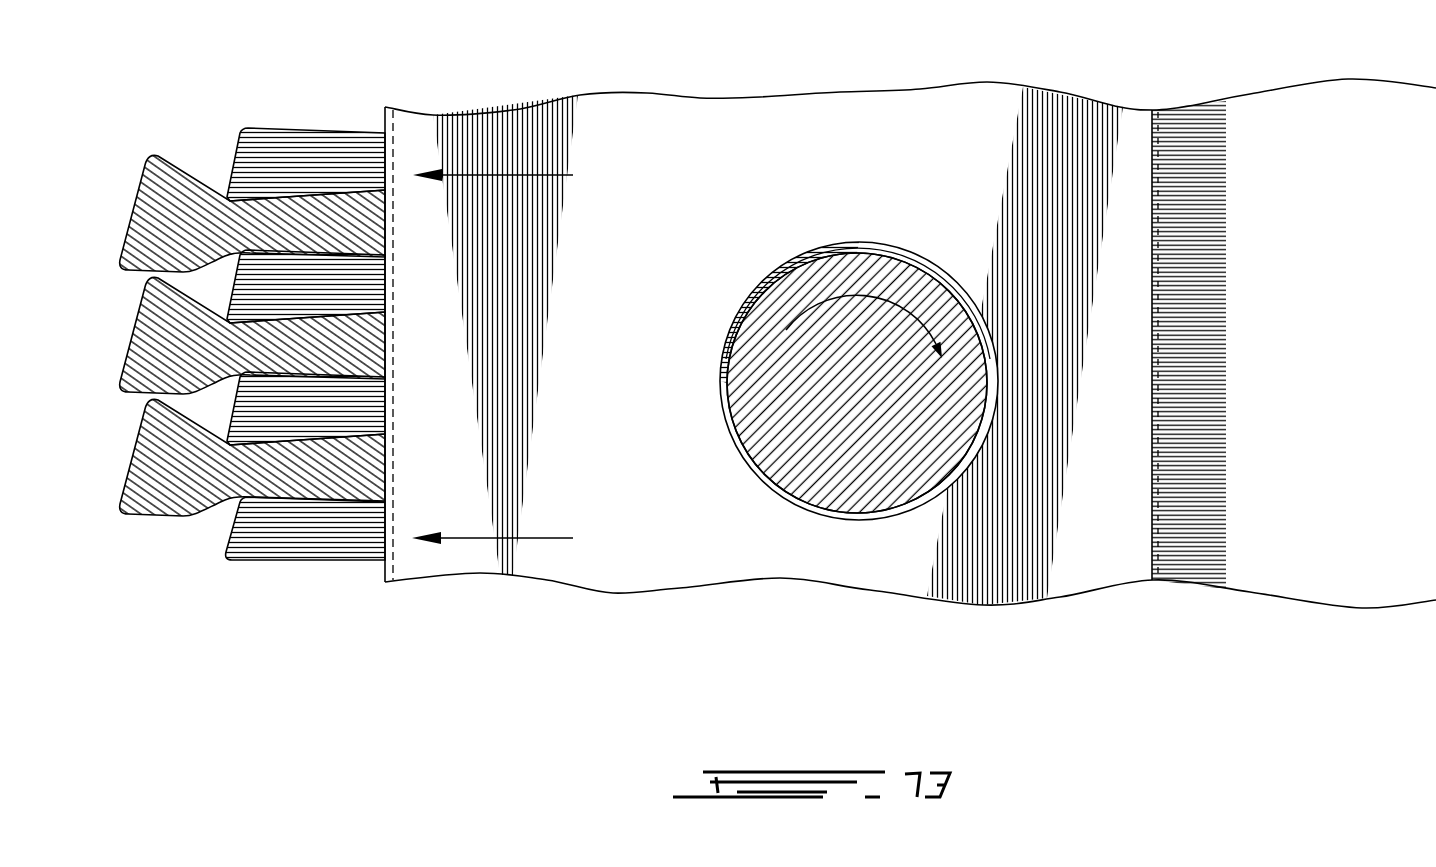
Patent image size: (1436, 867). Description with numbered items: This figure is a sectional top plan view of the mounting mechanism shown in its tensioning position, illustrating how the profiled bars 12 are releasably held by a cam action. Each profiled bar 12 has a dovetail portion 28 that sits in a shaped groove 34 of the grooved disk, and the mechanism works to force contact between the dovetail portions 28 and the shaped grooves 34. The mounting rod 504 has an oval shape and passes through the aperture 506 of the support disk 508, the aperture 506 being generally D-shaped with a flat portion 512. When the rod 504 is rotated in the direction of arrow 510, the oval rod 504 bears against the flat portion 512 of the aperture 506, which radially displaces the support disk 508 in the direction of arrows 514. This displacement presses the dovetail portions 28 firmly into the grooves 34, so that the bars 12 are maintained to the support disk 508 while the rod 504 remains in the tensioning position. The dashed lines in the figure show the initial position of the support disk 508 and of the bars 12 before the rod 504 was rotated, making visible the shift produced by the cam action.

The profiled bar 12 is at (148, 513).
The dovetail portion 28 is at (313, 482).
The groove 34 is at (284, 497).
The mounting rod 504 is at (900, 473).
The aperture 506 is at (802, 505).
The support disk 508 is at (1107, 553).
The arrow 510 is at (855, 295).
The flat portion 512 is at (725, 413).
The arrows 514 is at (513, 175).